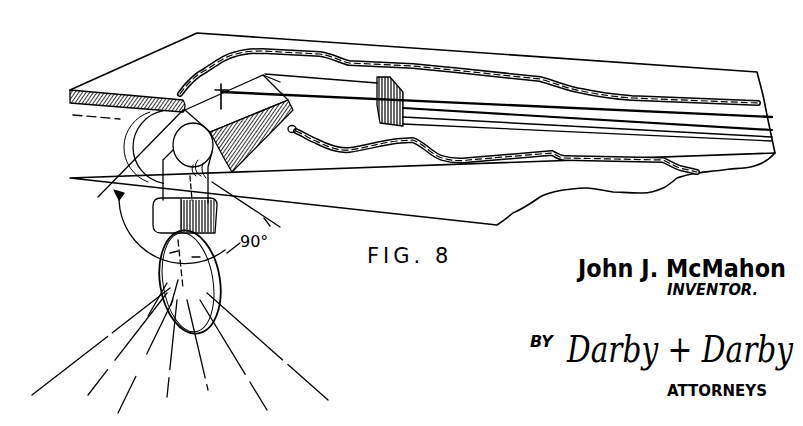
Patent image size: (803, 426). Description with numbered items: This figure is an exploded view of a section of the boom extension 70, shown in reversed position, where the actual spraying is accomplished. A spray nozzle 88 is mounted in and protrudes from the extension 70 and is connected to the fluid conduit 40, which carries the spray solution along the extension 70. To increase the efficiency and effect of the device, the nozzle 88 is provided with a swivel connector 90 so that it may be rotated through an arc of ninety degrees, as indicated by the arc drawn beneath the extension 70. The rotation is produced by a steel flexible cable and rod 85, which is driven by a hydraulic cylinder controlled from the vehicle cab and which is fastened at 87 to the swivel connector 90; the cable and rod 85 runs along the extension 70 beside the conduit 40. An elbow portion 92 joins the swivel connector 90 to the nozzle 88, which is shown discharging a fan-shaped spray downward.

The extension 70 is at (217, 50).
The fastening point 87 is at (250, 53).
The steel flexible cable and rod 85 is at (313, 100).
The fluid conduit 40 is at (473, 97).
The swivel connector 90 is at (235, 125).
The swivel elbow 92 is at (180, 147).
The spray nozzles 88 is at (218, 284).